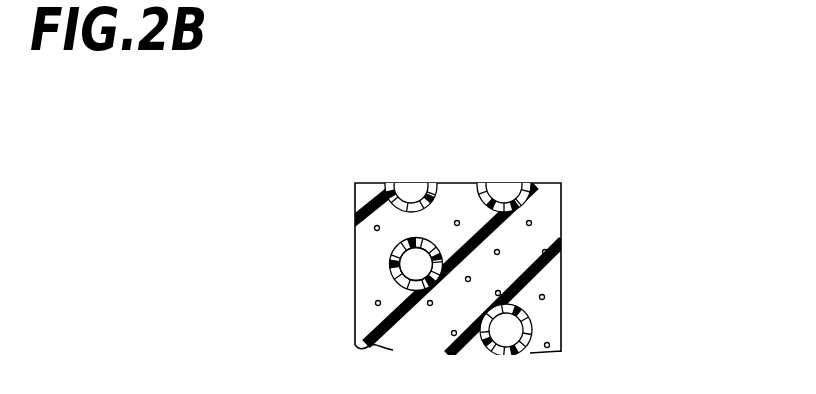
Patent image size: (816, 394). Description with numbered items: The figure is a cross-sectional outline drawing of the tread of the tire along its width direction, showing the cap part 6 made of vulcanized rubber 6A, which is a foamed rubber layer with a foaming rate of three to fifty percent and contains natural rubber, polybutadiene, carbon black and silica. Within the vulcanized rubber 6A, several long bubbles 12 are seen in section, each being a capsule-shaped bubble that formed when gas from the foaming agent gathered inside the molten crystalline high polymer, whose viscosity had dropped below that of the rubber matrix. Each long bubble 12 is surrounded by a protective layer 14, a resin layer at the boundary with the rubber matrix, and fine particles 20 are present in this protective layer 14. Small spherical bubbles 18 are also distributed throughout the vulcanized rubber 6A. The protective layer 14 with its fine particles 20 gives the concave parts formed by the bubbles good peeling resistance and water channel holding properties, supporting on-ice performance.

The cap part 6 is at (605, 177).
The vulcanized rubber 6A is at (548, 241).
The long bubble 12 is at (435, 246).
The protective layer 14 is at (420, 264).
The spherical bubble 18 is at (530, 221).
The fine particle 20 is at (412, 241).